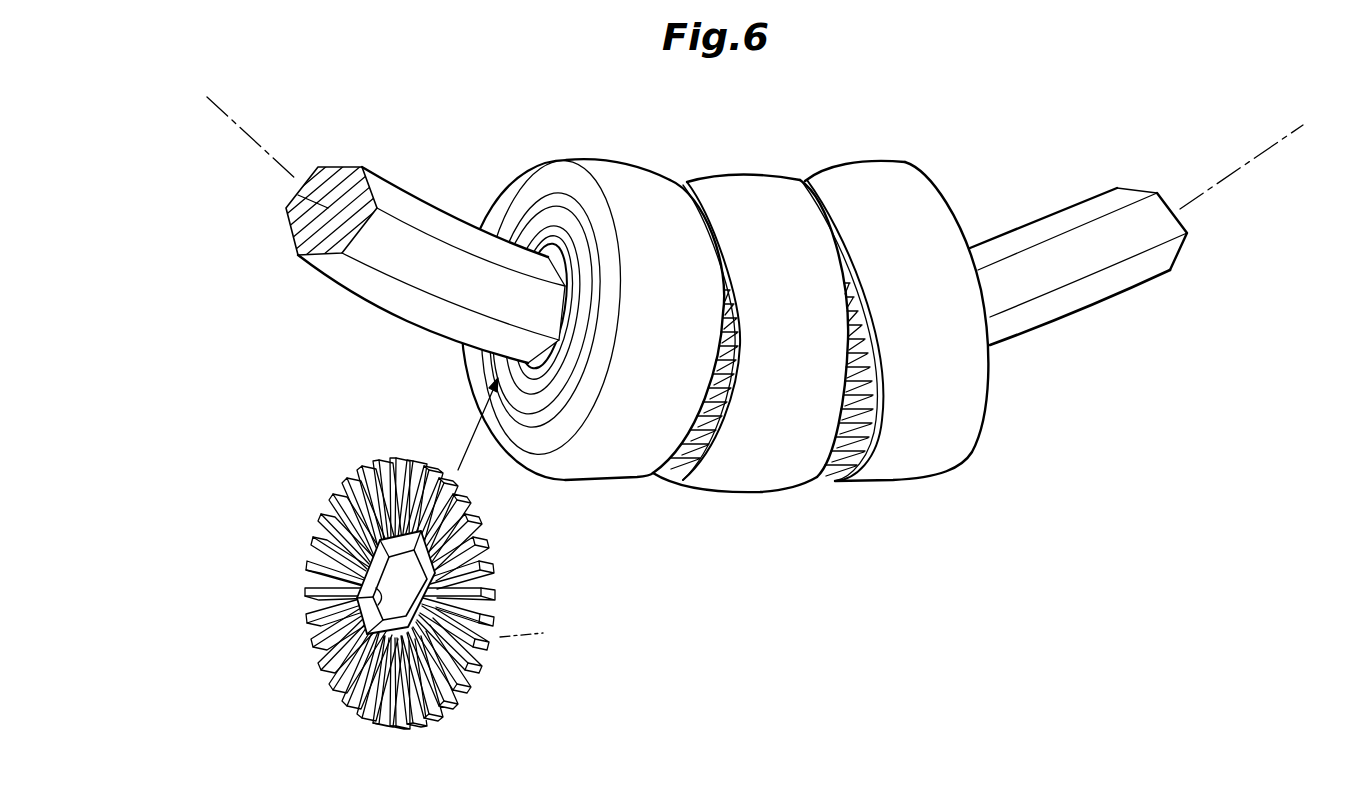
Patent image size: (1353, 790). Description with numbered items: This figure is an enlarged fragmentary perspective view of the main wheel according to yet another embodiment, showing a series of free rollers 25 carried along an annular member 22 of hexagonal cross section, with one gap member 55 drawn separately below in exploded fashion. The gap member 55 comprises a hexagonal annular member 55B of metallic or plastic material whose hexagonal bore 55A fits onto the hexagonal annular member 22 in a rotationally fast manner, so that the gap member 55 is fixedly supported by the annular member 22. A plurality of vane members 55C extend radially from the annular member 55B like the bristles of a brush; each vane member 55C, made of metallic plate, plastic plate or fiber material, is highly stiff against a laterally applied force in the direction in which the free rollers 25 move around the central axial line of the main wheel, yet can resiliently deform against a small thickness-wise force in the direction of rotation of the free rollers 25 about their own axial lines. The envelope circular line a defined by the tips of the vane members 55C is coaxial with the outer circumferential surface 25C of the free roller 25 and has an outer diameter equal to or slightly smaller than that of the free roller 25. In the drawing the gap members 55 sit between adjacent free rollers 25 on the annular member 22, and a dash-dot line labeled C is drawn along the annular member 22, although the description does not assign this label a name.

The annular member 22 is at (1050, 308).
The free roller 25 is at (622, 162).
The outer circumferential surface 25C is at (618, 457).
The gap member 55 is at (550, 528).
The hexagonal bore 55A is at (337, 603).
The hexagonal annular member 55B is at (367, 550).
The vane members 55C is at (472, 657).
The shaft axis C is at (247, 142).
The envelope circular line a is at (531, 633).